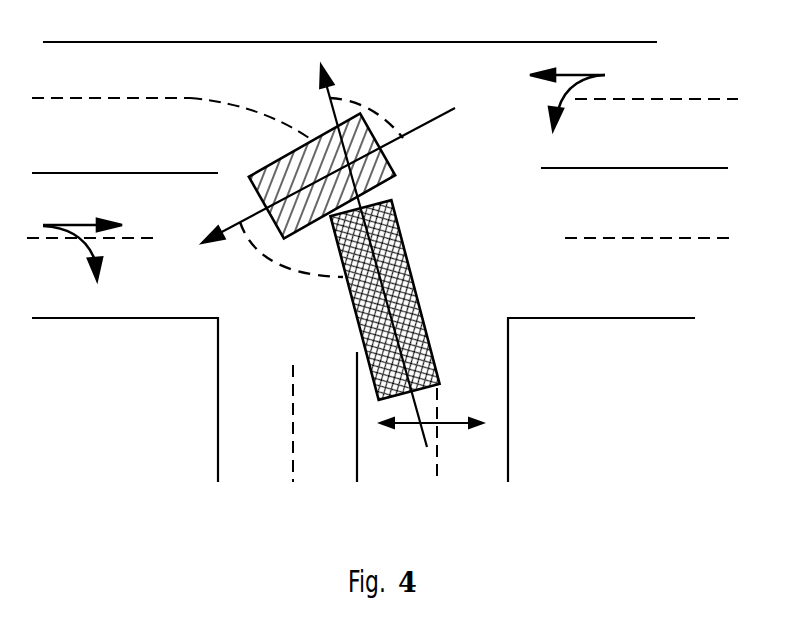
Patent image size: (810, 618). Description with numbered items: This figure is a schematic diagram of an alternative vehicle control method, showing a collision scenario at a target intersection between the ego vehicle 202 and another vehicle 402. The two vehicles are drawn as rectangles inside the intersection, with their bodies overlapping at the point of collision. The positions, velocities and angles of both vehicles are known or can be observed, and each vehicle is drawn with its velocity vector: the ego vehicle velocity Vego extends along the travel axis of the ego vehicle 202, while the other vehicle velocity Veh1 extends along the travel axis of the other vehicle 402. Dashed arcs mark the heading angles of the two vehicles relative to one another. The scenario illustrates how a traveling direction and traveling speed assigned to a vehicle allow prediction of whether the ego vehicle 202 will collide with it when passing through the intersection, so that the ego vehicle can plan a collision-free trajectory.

The ego vehicle 202 is at (272, 166).
The another vehicle 402 is at (420, 317).
The ego vehicle velocity vector Vego is at (340, 242).
The other vehicle velocity vector Veh1 is at (302, 195).